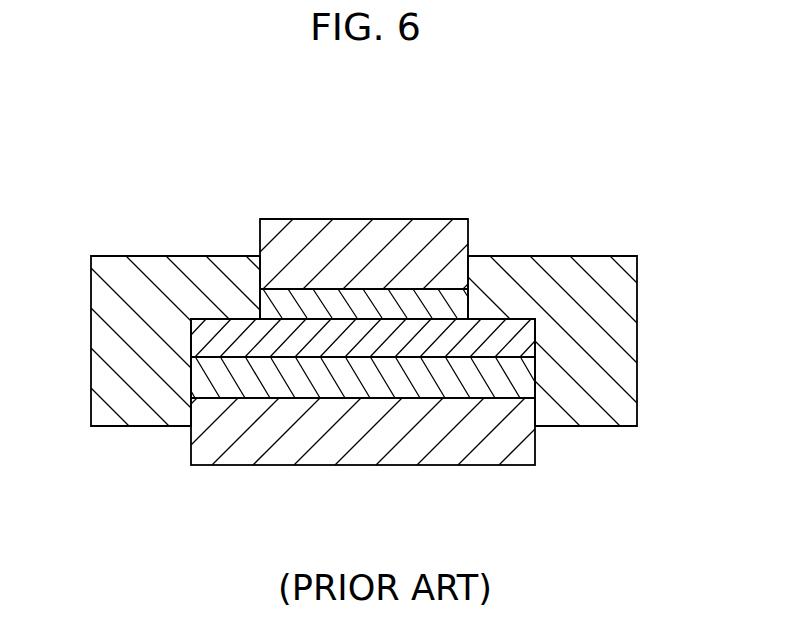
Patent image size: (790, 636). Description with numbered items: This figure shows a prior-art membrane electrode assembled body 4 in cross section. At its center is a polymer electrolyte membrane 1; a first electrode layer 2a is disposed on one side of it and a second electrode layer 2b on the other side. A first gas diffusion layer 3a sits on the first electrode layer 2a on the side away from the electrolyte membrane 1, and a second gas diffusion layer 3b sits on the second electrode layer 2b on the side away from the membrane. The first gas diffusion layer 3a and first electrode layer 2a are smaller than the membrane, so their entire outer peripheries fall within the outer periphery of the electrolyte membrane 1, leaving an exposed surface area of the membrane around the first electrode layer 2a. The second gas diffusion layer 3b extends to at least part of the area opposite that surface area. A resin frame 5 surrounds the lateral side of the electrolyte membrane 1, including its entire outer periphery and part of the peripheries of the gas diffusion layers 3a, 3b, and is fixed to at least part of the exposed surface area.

The polymer electrolyte membrane 1 is at (512, 342).
The first electrode layer 2a is at (458, 306).
The second electrode layer 2b is at (512, 381).
The first gas diffusion layer 3a is at (430, 226).
The second gas diffusion layer 3b is at (476, 452).
The membrane electrode assembled body 4 is at (310, 216).
The resin frame 5 is at (108, 315).